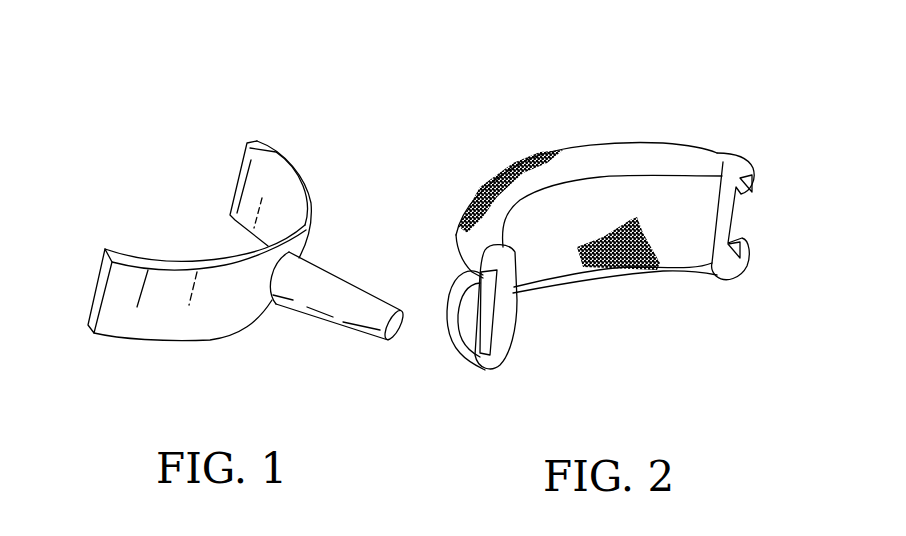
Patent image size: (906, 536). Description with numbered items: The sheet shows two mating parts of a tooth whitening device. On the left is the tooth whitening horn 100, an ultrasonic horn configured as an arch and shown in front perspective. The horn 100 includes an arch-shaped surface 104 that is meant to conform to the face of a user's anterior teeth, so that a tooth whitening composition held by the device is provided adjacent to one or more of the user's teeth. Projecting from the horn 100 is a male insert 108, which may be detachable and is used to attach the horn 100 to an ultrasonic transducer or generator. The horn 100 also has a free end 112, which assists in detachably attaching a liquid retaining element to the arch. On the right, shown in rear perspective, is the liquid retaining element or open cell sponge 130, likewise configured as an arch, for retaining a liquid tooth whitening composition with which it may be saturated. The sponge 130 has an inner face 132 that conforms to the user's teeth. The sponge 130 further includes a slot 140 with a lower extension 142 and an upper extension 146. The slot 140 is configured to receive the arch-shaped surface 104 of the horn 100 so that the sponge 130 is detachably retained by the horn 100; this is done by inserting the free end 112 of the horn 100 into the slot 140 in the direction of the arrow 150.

In FIG. 1, the tooth whitening horn 100 is at (103, 343).
In FIG. 1, the arch-shaped surface 104 is at (246, 155).
In FIG. 1, the insert 108 is at (337, 310).
In FIG. 1, the free end 112 is at (265, 188).
In FIG. 2, the liquid retaining element 130 is at (644, 159).
In FIG. 2, the inner face 132 is at (700, 212).
In FIG. 2, the slot 140 is at (471, 309).
In FIG. 2, the lower extension 142 is at (450, 345).
In FIG. 2, the upper extension 146 is at (470, 297).
In FIG. 2, the arrow 150 is at (750, 218).